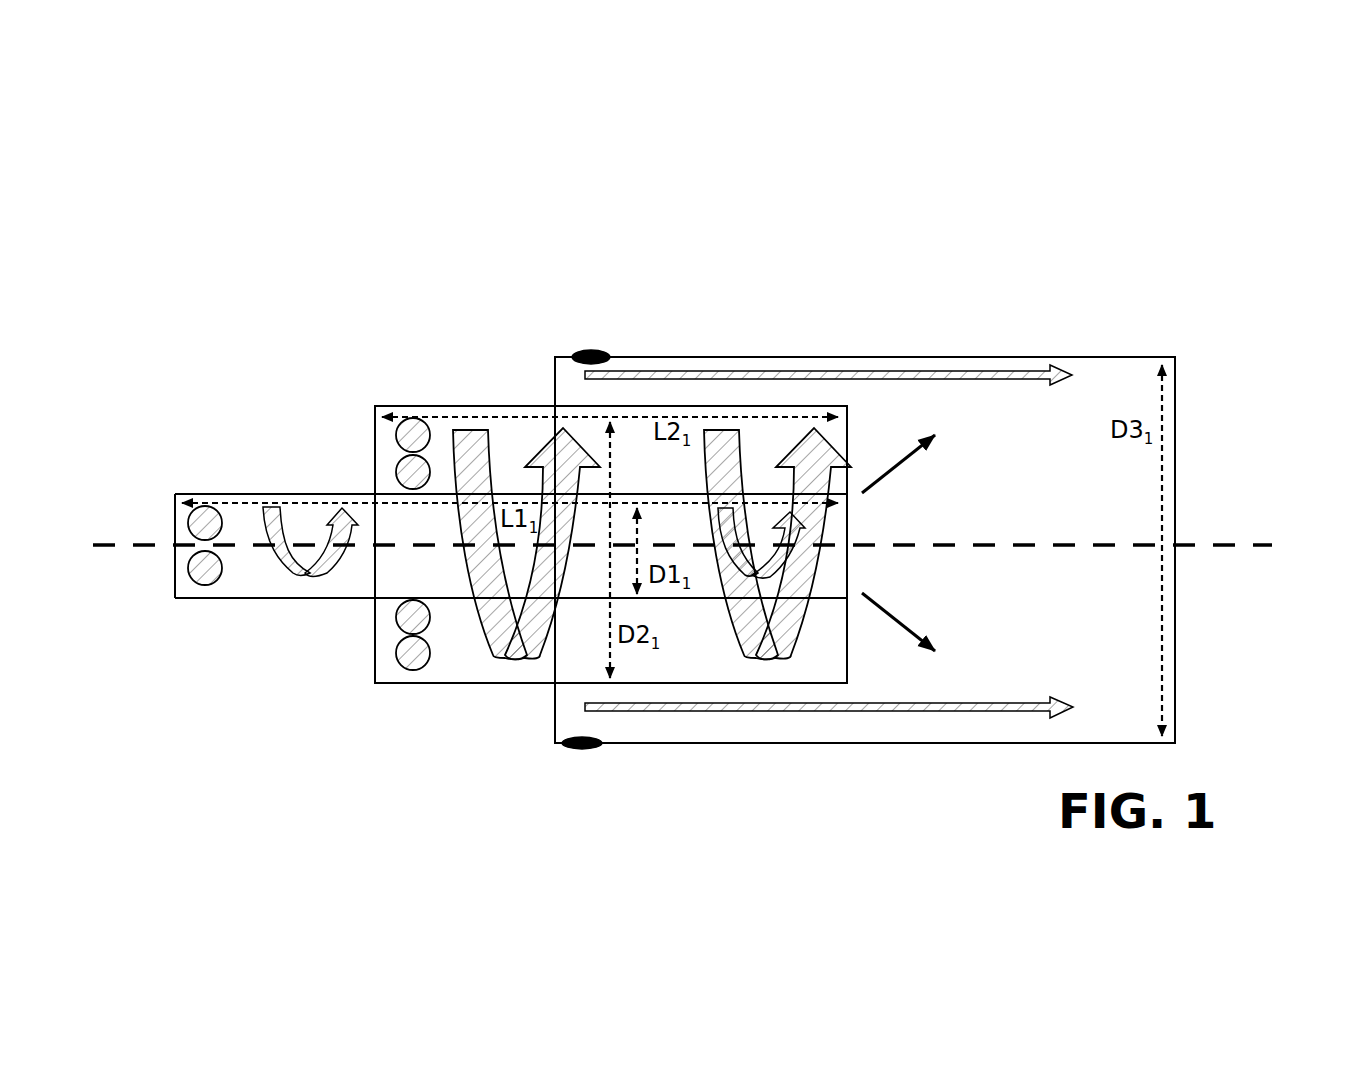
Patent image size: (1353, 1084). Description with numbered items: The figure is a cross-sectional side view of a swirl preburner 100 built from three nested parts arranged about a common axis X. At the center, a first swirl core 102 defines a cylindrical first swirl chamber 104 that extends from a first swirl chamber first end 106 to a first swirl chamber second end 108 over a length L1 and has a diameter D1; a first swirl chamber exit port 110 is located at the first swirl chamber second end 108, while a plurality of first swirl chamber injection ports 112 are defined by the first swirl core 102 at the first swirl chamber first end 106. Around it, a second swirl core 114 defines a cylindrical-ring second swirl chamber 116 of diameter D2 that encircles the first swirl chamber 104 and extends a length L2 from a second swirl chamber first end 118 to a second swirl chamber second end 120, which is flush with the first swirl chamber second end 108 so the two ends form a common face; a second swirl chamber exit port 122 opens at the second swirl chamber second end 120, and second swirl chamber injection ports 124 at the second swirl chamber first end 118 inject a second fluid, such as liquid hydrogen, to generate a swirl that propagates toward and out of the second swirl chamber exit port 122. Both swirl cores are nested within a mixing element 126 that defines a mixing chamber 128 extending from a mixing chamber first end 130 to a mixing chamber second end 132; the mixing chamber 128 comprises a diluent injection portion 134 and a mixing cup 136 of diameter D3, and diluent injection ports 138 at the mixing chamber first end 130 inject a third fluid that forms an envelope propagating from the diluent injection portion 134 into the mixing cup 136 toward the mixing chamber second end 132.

The swirl preburner 100 is at (1206, 243).
The first swirl core 102 is at (260, 598).
The first swirl chamber 104 is at (333, 580).
The first swirl chamber first end 106 is at (173, 577).
The first swirl chamber second end 108 is at (848, 525).
The first swirl chamber exit port 110 is at (860, 588).
The first swirl chamber injection ports 112 is at (188, 523).
The second swirl core 114 is at (457, 685).
The second swirl chamber 116 is at (513, 450).
The second swirl chamber first end 118 is at (374, 431).
The second swirl chamber second end 120 is at (848, 425).
The second swirl chamber exit port 122 is at (836, 669).
The second swirl chamber injection ports 124 is at (396, 470).
The mixing element 126 is at (860, 745).
The mixing chamber 128 is at (1155, 678).
The mixing chamber first end 130 is at (554, 372).
The mixing chamber second end 132 is at (1176, 360).
The diluent injection portion 134 is at (741, 388).
The mixing cup 136 is at (1018, 393).
The diluent injection ports 138 is at (590, 350).